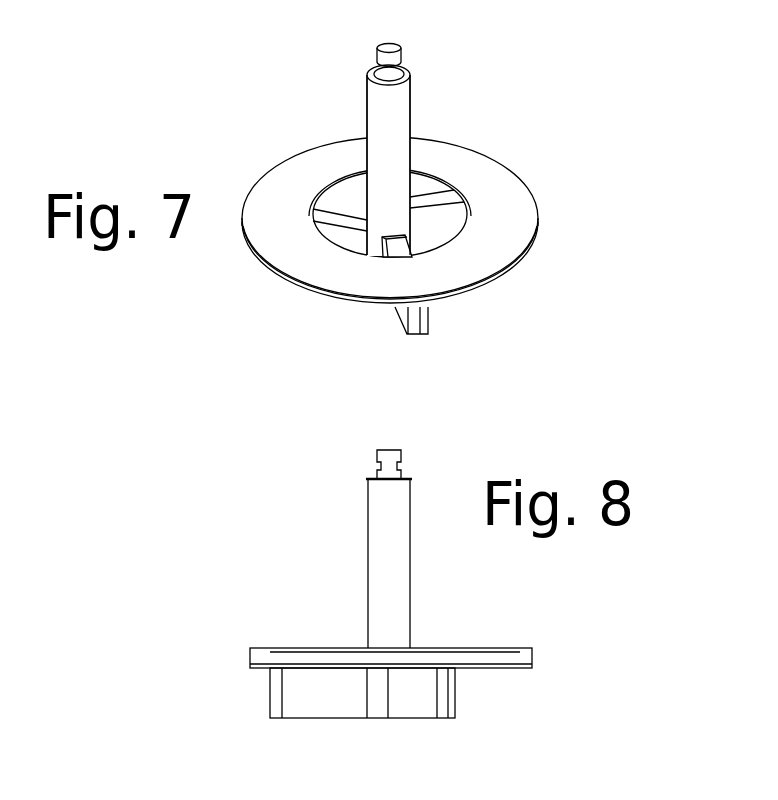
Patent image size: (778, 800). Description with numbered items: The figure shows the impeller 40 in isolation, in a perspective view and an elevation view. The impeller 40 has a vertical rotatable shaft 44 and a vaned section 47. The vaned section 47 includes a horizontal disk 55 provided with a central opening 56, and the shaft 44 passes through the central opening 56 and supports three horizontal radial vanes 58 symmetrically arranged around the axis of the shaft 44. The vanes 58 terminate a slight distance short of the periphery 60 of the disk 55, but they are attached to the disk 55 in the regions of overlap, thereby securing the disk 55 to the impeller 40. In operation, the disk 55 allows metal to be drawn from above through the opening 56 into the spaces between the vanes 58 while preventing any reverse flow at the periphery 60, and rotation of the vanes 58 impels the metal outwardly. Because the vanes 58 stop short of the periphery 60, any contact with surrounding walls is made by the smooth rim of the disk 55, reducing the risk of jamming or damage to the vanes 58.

In FIG. 7, the impeller 40 is at (520, 102).
In FIG. 7, the vertical rotatable shaft 44 is at (387, 118).
In FIG. 8, the vertical rotatable shaft 44 is at (380, 523).
In FIG. 7, the vaned section 47 is at (568, 204).
In FIG. 8, the vaned section 47 is at (238, 643).
In FIG. 7, the horizontal disk 55 is at (538, 225).
In FIG. 8, the horizontal disk 55 is at (508, 647).
In FIG. 7, the central opening 56 is at (445, 195).
In FIG. 7, the horizontal radial vanes 58 is at (345, 208).
In FIG. 8, the horizontal radial vanes 58 is at (305, 707).
In FIG. 7, the periphery 60 is at (490, 285).
In FIG. 8, the periphery 60 is at (533, 660).